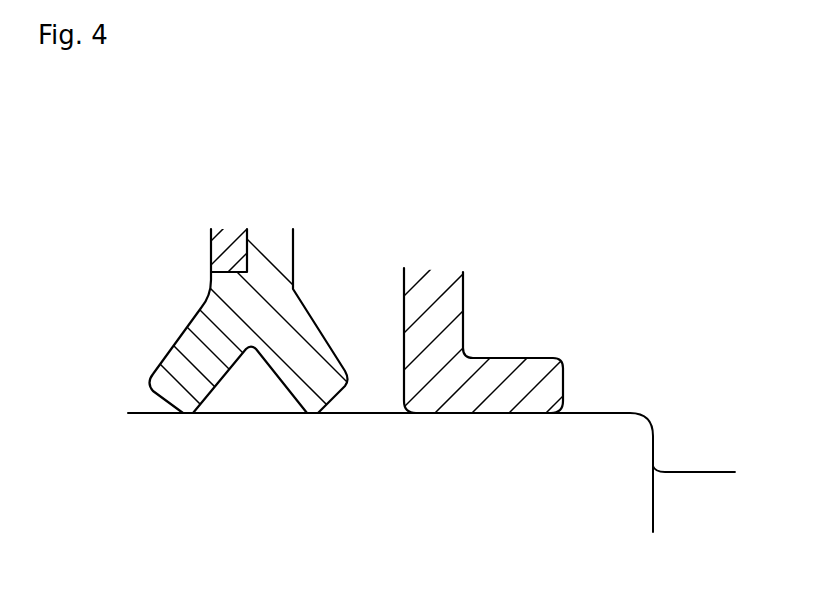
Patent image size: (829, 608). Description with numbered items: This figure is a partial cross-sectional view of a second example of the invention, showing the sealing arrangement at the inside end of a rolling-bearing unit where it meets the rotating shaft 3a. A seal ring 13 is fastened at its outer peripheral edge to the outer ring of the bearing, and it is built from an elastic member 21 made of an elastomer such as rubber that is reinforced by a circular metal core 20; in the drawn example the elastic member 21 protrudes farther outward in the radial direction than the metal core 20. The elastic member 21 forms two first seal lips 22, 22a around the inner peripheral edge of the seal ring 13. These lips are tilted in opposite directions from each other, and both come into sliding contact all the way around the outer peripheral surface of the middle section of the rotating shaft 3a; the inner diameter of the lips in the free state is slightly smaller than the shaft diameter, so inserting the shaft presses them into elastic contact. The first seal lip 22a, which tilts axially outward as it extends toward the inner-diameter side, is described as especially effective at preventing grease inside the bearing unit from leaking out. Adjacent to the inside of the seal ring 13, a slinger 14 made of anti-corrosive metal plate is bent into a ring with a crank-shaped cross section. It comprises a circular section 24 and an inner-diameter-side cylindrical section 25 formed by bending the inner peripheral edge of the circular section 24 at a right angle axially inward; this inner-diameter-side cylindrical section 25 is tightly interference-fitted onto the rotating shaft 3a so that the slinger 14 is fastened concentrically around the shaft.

The rotating shaft 3a is at (188, 458).
The seal ring 13 is at (268, 252).
The slinger 14 is at (455, 297).
The metal core 20 is at (235, 230).
The elastic member 21 is at (270, 286).
The first seal lip 22 is at (324, 367).
The first seal lip 22a is at (197, 358).
The circular section 24 is at (435, 320).
The inner-diameter-side cylindrical section 25 is at (507, 390).